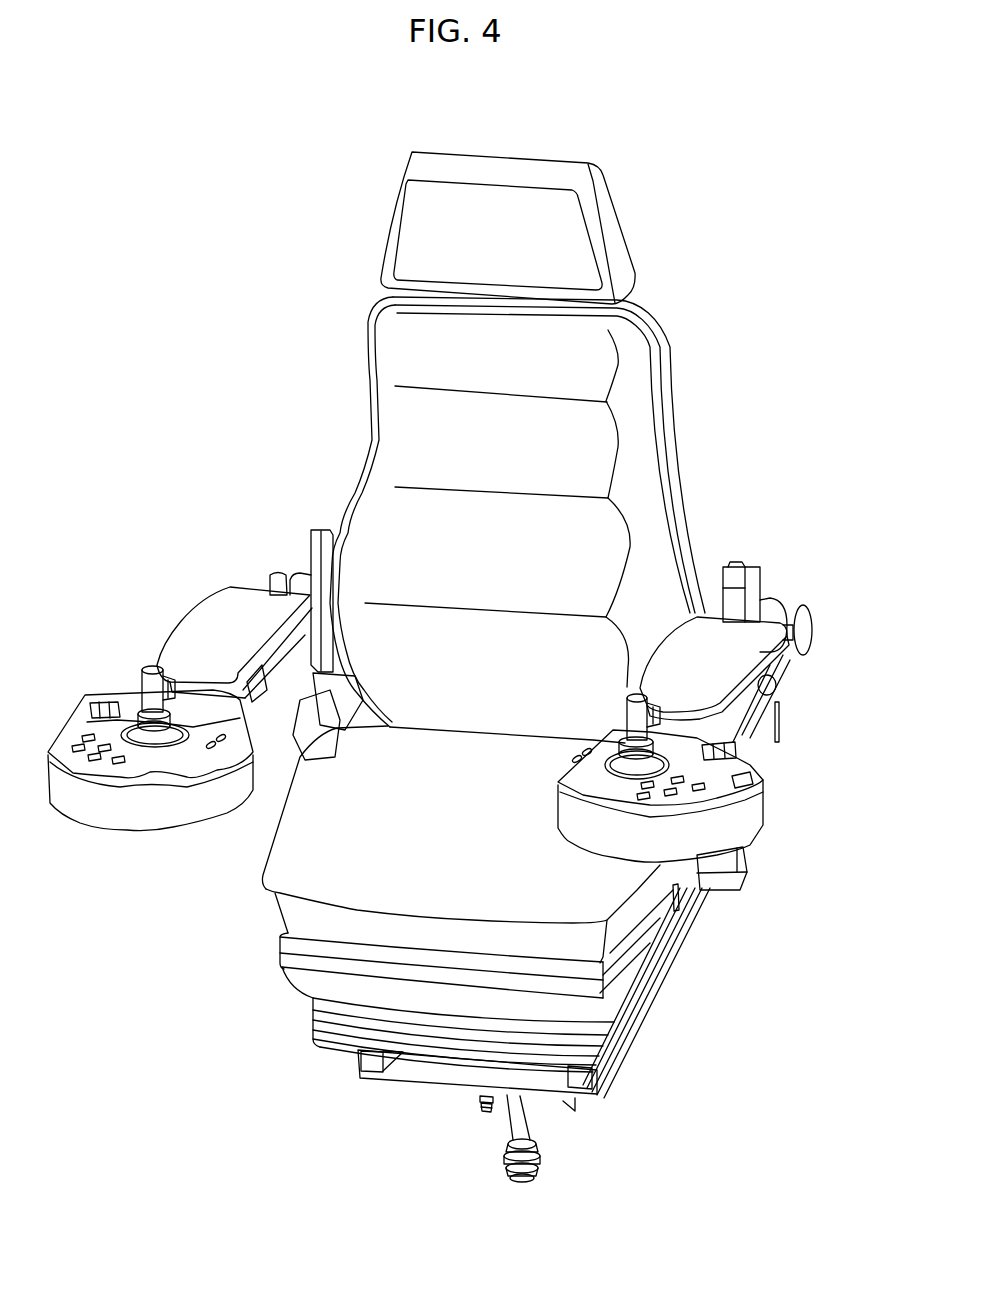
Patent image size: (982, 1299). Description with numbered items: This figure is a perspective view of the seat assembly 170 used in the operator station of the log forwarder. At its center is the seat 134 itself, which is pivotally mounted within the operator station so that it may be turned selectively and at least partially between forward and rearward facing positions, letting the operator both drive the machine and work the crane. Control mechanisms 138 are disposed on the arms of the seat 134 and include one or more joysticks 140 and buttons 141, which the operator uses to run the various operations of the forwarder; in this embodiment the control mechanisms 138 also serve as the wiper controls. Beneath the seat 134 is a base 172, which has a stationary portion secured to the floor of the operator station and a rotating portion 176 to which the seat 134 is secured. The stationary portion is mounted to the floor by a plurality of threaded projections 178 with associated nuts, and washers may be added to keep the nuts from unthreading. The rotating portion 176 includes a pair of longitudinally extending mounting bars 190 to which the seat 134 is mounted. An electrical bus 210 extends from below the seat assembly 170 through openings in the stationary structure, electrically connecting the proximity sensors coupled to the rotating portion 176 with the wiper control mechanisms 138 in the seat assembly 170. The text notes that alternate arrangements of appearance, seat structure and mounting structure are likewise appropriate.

The seat 134 is at (670, 397).
The seat assembly 170 is at (534, 557).
The control mechanisms 138 is at (773, 791).
The joysticks 140 is at (152, 666).
The buttons 141 is at (150, 770).
The rotating portion 176 is at (667, 990).
The base 172 is at (490, 1082).
The mounting bars 190 is at (373, 1055).
The threaded projections 178 is at (487, 1114).
The electrical bus 210 is at (535, 1124).